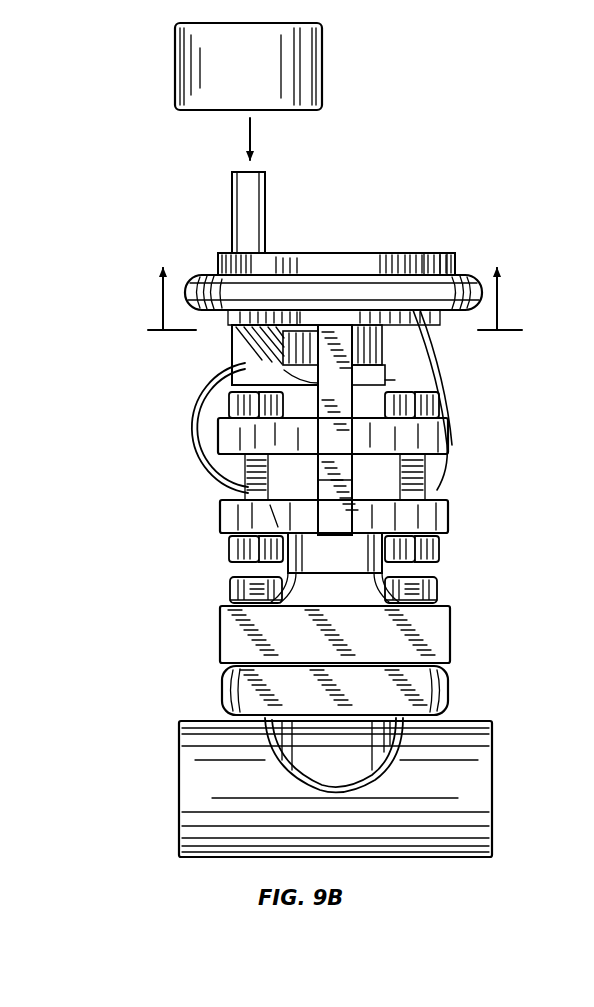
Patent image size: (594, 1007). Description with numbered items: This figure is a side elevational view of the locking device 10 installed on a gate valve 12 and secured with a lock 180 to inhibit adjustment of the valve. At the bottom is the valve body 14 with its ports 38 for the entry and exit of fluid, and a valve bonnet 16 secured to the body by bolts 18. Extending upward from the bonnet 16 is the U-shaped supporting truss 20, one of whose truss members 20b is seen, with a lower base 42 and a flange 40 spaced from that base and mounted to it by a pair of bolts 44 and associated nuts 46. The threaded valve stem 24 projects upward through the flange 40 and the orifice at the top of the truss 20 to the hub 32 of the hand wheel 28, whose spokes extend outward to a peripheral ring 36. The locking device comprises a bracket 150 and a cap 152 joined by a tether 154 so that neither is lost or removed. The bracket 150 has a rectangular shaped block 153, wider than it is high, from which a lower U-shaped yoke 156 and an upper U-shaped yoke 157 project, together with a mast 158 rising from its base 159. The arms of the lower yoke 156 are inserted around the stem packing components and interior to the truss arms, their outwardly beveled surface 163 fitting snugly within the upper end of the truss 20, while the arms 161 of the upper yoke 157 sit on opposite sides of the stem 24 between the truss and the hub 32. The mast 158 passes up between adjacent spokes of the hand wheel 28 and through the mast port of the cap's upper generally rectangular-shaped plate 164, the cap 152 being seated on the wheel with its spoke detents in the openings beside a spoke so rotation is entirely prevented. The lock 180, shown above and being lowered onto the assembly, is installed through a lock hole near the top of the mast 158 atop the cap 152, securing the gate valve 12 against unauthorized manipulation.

The cylindrical lock 180 is at (175, 68).
The mast 158 is at (232, 188).
The base 159 is at (218, 306).
The hand wheel 28 is at (196, 280).
The peripheral ring 36 is at (470, 285).
The valve stem 24 is at (336, 255).
The upper generally rectangular-shaped plate 164 is at (391, 253).
The cap 152 is at (447, 250).
The hub 32 is at (423, 312).
The locking device 10 is at (328, 305).
The rectangular shaped block 153 is at (228, 345).
The bracket 150 is at (229, 357).
The lower U-shaped yoke 156 is at (386, 362).
The outwardly beveled surface 163 is at (386, 374).
The arms 161 is at (386, 380).
The upper U-shaped yoke 157 is at (297, 312).
The U-shaped supporting truss 20 is at (317, 432).
The truss member 20b is at (326, 482).
The tether 154 is at (189, 412).
The flange 40 is at (426, 432).
The bolts 44 is at (432, 474).
The lower base 42 is at (430, 517).
The nuts 46 is at (440, 549).
The gate valve 12 is at (516, 550).
The valve bonnet 16 is at (336, 563).
The bolts 18 is at (230, 586).
The ports 38 is at (179, 787).
The valve body 14 is at (336, 758).